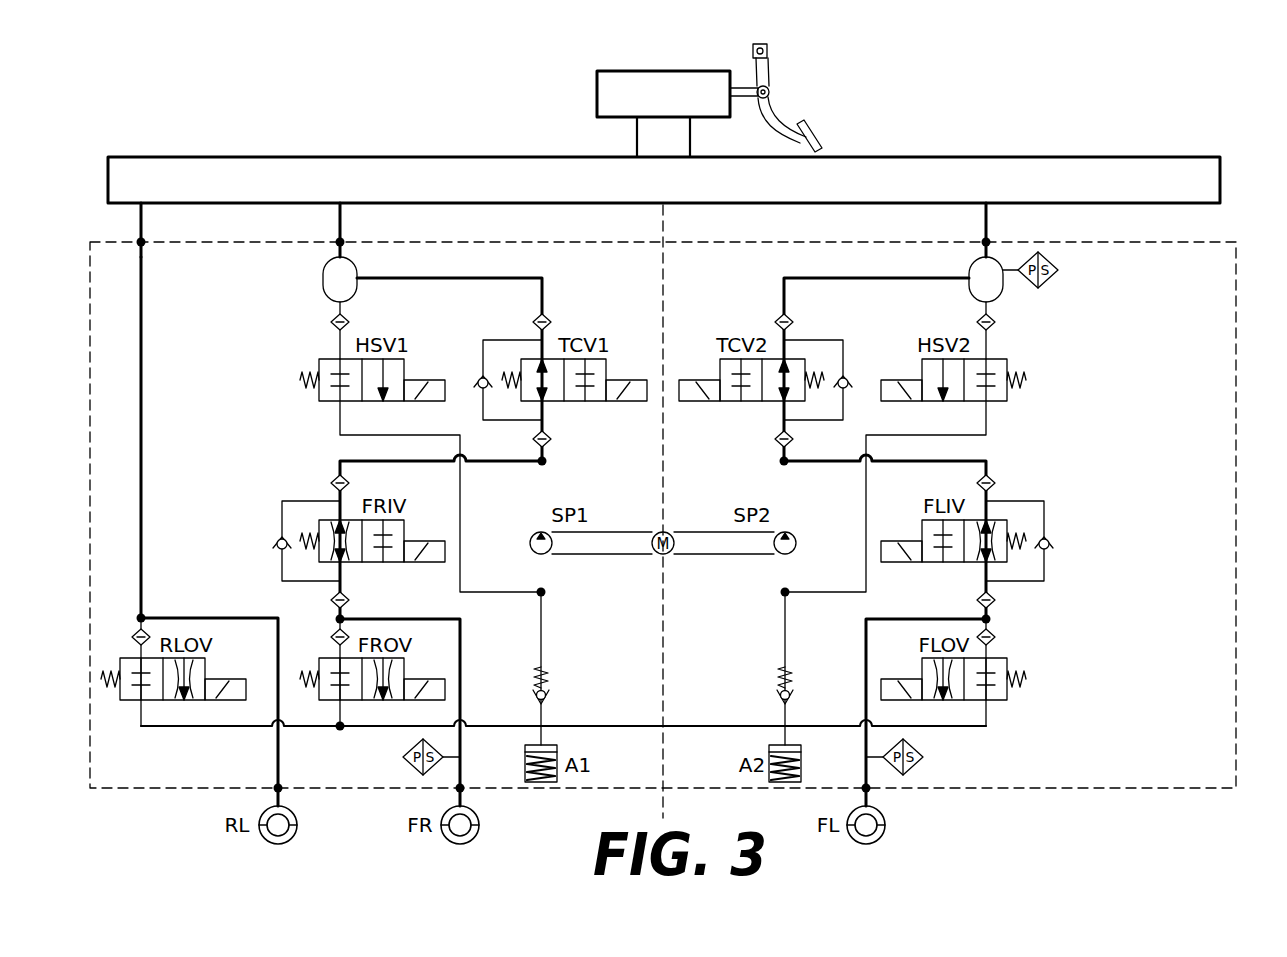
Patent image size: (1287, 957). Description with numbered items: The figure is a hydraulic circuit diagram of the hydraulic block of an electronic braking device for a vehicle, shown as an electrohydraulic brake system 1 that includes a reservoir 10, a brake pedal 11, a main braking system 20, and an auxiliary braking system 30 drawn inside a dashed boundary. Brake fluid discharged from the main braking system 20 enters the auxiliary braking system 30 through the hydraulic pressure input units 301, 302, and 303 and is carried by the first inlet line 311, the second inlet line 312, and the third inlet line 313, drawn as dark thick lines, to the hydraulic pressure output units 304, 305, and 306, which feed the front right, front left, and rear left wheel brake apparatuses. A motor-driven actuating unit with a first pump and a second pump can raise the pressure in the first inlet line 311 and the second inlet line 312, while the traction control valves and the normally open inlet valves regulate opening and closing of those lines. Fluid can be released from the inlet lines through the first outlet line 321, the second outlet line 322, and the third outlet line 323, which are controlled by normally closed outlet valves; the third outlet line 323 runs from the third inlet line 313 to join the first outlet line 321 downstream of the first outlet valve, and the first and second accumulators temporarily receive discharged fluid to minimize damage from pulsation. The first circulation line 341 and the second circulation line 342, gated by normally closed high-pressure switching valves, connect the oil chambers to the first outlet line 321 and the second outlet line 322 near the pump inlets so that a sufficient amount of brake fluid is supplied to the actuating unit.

The electrohydraulic brake system 1 is at (98, 88).
The reservoir 10 is at (595, 86).
The brake pedal 11 is at (777, 108).
The main braking system 20 is at (1125, 157).
The auxiliary braking system 30 is at (1232, 242).
The hydraulic pressure input unit 301 is at (345, 241).
The hydraulic pressure input unit 302 is at (991, 241).
The hydraulic pressure input unit 303 is at (145, 241).
The first inlet line 311 is at (463, 660).
The second inlet line 312 is at (863, 660).
The third inlet line 313 is at (147, 428).
The first outlet line 321 is at (543, 620).
The second outlet line 322 is at (782, 620).
The third outlet line 323 is at (206, 728).
The first circulation line 341 is at (338, 419).
The second circulation line 342 is at (988, 419).
The hydraulic pressure output unit 304 is at (465, 790).
The hydraulic pressure output unit 305 is at (870, 790).
The hydraulic pressure output unit 306 is at (283, 790).